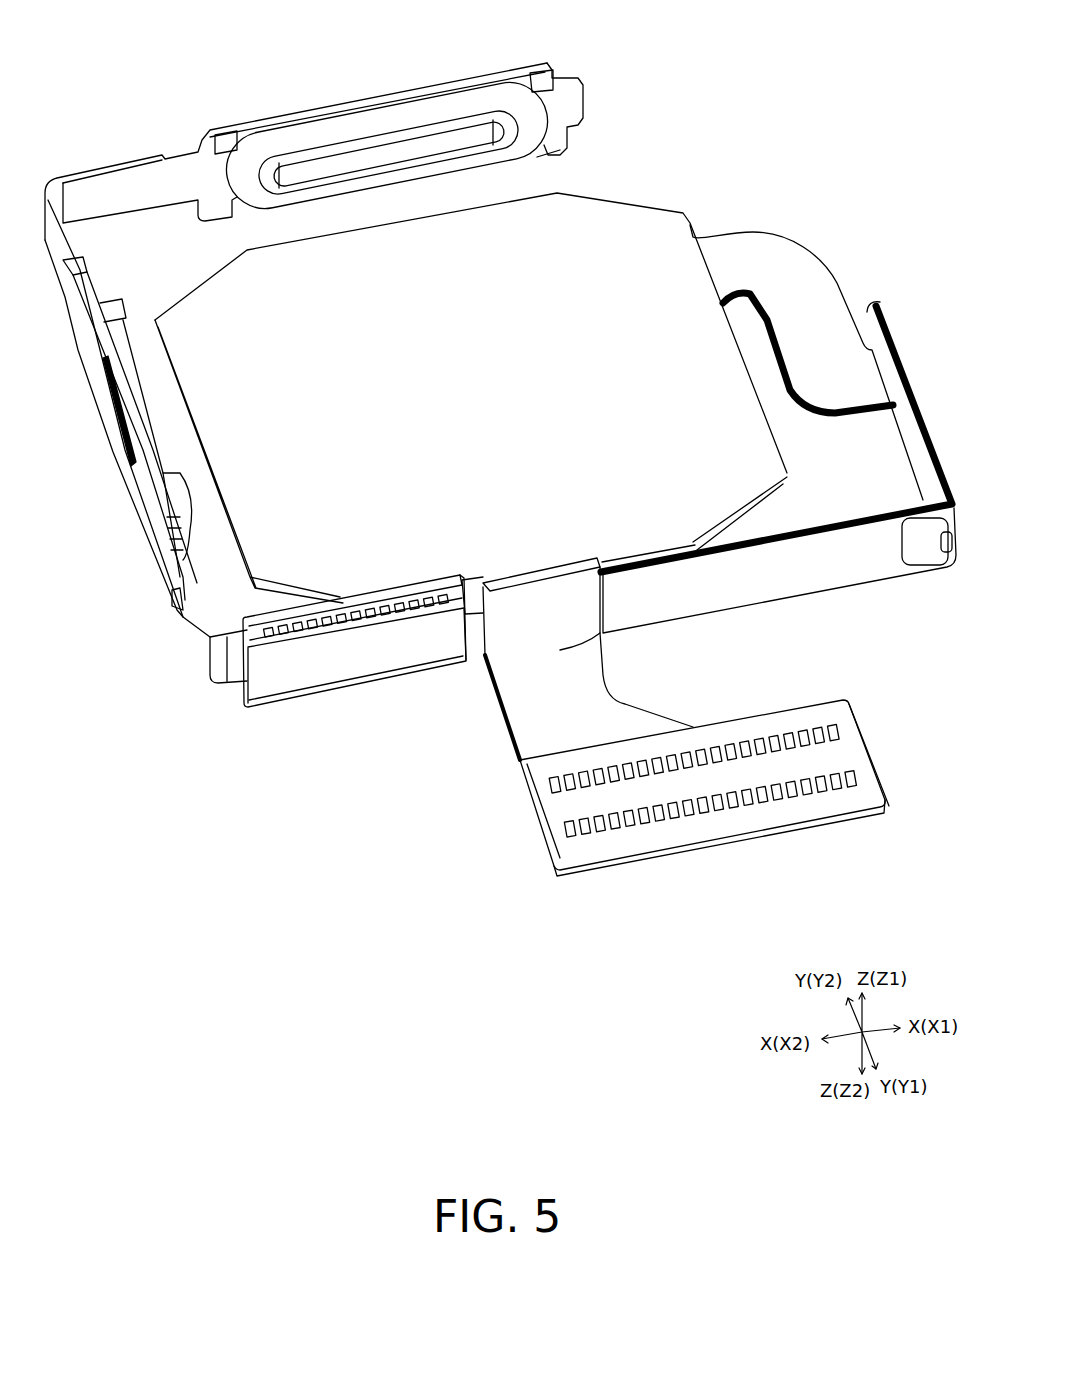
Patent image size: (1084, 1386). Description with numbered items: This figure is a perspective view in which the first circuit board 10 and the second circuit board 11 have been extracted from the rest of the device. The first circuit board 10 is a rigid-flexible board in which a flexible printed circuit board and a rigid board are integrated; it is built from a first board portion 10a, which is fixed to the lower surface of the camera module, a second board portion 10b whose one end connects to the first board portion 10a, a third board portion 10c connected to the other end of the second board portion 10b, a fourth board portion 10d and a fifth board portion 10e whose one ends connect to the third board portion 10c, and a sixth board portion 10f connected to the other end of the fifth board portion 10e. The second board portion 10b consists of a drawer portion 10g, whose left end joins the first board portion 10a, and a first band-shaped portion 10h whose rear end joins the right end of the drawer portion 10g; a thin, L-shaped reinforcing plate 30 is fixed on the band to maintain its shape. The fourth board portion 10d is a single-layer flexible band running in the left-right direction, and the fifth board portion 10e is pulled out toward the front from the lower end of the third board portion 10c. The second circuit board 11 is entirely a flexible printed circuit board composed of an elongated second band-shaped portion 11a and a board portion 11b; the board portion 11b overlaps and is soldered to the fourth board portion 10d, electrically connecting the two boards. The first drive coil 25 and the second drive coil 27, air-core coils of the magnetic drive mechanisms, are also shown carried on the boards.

The first circuit board 10 is at (555, 529).
The first board portion 10a is at (627, 197).
The second board portion 10b is at (778, 480).
The third board portion 10c is at (540, 566).
The fourth board portion 10d is at (363, 678).
The fifth board portion 10e is at (497, 723).
The sixth board portion 10f is at (717, 848).
The drawer portion 10g is at (840, 280).
The first band-shaped portion 10h is at (805, 594).
The second circuit board 11 is at (302, 373).
The second band-shaped portion 11a is at (120, 167).
The board portion 11b is at (354, 638).
The first drive coil 25 is at (110, 302).
The second drive coil 27 is at (408, 92).
The reinforcing plate 30 is at (900, 545).